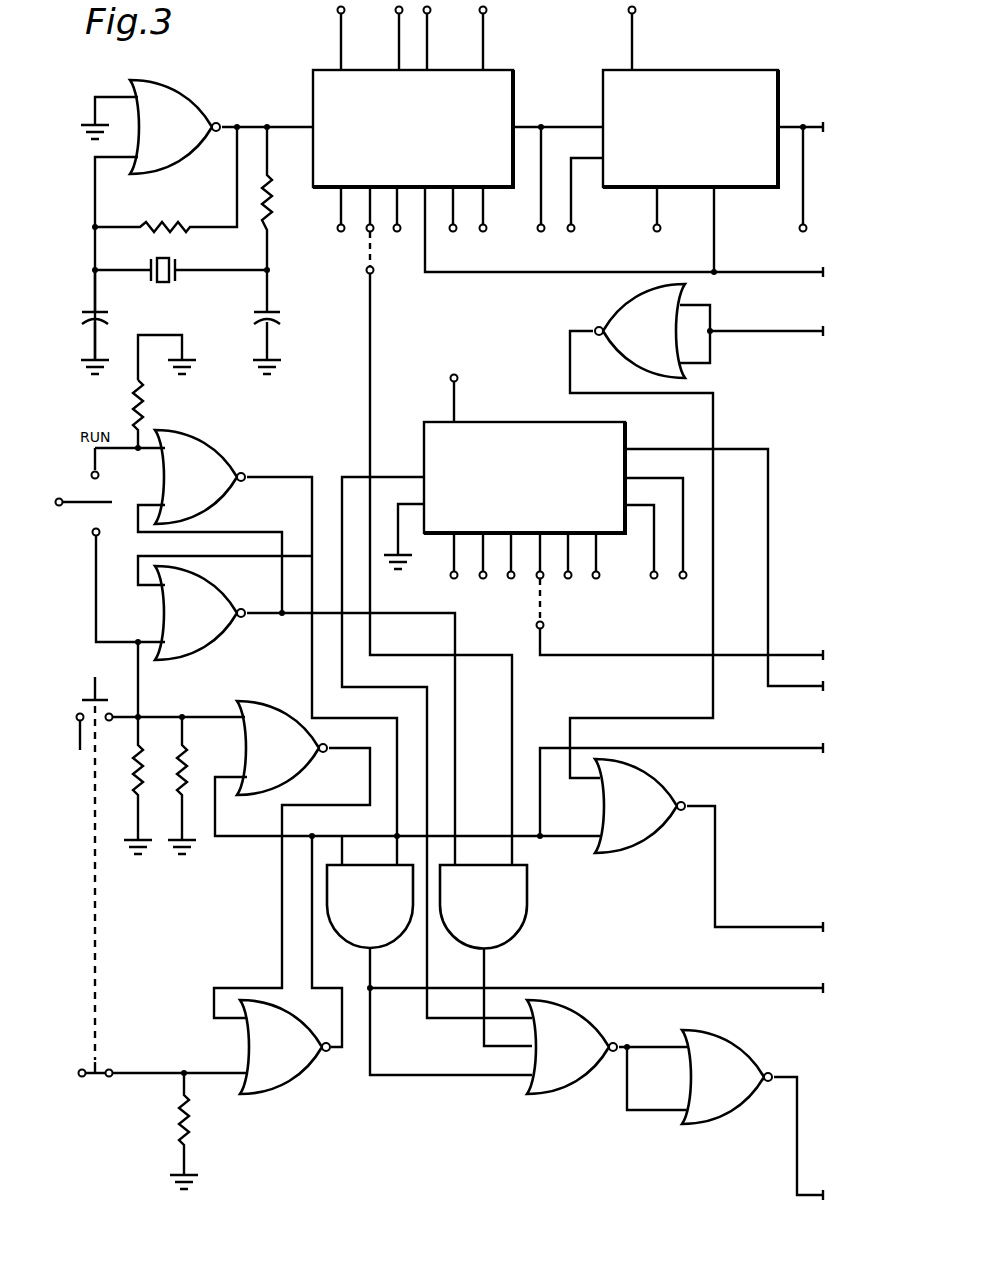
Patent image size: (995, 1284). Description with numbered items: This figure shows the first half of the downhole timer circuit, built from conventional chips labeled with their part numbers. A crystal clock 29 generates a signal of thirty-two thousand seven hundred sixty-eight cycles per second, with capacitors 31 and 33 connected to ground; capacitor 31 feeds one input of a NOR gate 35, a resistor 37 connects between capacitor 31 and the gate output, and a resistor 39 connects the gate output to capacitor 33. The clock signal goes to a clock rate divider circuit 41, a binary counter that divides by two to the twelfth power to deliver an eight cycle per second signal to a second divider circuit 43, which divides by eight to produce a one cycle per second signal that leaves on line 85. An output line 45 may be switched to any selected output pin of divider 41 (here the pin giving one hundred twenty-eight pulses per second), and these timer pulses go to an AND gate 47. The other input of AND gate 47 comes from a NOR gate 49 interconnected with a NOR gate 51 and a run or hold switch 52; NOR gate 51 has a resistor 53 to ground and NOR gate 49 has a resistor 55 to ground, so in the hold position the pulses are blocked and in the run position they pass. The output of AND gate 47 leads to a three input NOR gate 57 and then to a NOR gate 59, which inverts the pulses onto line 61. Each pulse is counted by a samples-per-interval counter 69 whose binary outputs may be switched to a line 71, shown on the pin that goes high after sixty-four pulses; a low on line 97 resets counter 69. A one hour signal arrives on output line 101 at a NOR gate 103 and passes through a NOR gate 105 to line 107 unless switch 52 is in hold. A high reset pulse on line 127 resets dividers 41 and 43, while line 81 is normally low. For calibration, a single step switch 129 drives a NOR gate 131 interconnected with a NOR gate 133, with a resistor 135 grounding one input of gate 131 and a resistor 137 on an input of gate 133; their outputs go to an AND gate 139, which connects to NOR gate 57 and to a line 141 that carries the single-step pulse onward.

The crystal clock 29 is at (178, 270).
The capacitor 31 is at (106, 308).
The capacitor 33 is at (258, 306).
The NOR gate 35 is at (196, 104).
The resistor 37 is at (170, 222).
The resistor 39 is at (272, 203).
The clock rate divider circuit 41 is at (497, 70).
The divider circuit 43 is at (688, 70).
The output line 45 is at (372, 350).
The AND gate 47 is at (530, 898).
The NOR gate 49 is at (228, 637).
The NOR gate 51 is at (208, 438).
The run or hold switch 52 is at (72, 506).
The resistor 53 is at (148, 395).
The resistor 55 is at (148, 772).
The three input NOR gate 57 is at (560, 1095).
The NOR gate 59 is at (740, 1040).
The line 61 is at (797, 1155).
The counter 69 is at (488, 422).
The line 71 is at (798, 655).
The line 81 is at (773, 746).
The line 85 is at (818, 126).
The line 97 is at (785, 690).
The output line 101 is at (812, 340).
The NOR gate 103 is at (612, 310).
The NOR gate 105 is at (662, 784).
The line 107 is at (745, 926).
The line 127 is at (812, 280).
The single step switch 129 is at (90, 698).
The NOR gate 131 is at (302, 768).
The NOR gate 133 is at (305, 1088).
The resistor 135 is at (190, 765).
The resistor 137 is at (170, 1128).
The AND gate 139 is at (364, 864).
The line 141 is at (722, 986).